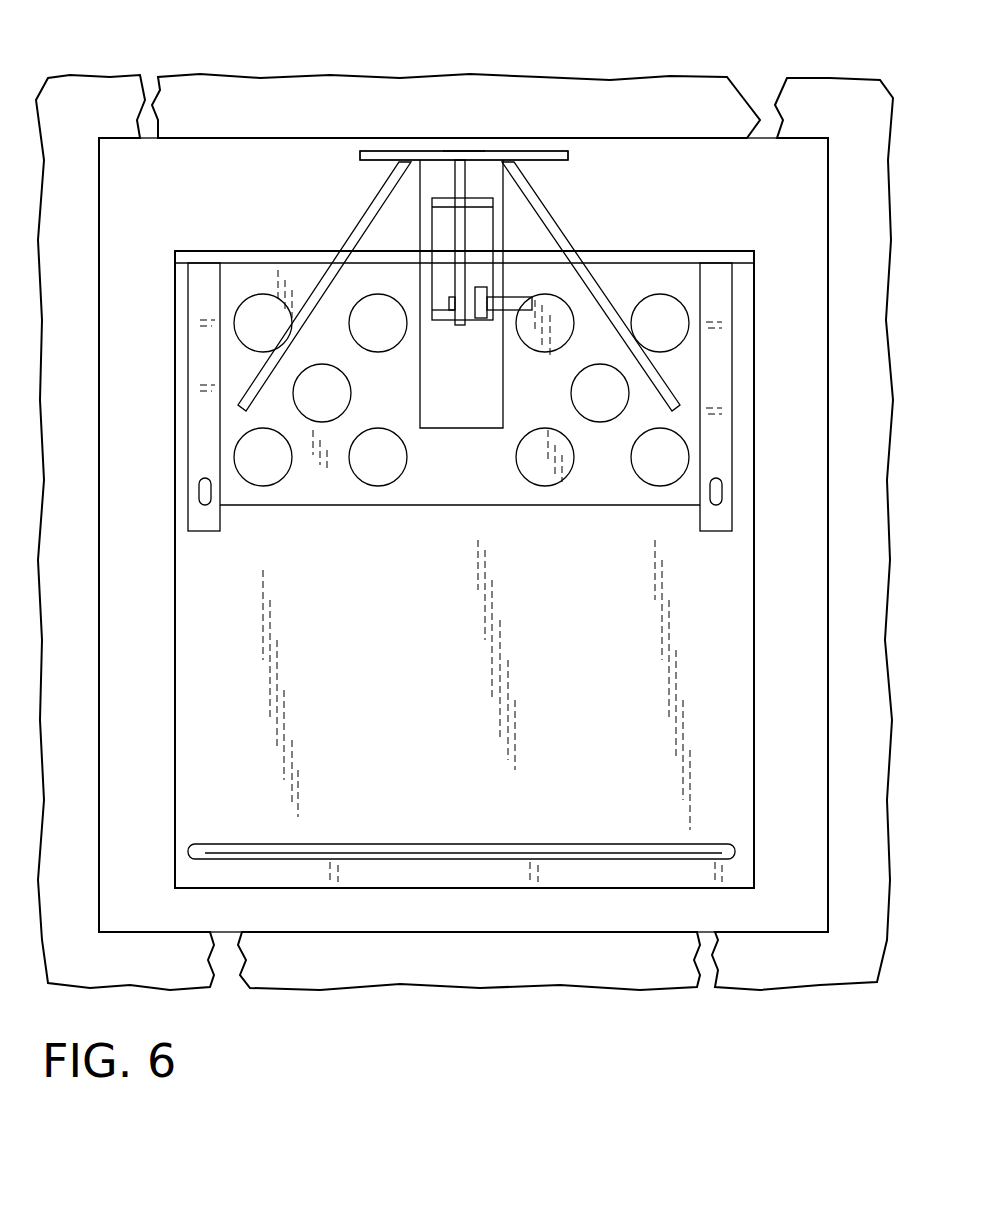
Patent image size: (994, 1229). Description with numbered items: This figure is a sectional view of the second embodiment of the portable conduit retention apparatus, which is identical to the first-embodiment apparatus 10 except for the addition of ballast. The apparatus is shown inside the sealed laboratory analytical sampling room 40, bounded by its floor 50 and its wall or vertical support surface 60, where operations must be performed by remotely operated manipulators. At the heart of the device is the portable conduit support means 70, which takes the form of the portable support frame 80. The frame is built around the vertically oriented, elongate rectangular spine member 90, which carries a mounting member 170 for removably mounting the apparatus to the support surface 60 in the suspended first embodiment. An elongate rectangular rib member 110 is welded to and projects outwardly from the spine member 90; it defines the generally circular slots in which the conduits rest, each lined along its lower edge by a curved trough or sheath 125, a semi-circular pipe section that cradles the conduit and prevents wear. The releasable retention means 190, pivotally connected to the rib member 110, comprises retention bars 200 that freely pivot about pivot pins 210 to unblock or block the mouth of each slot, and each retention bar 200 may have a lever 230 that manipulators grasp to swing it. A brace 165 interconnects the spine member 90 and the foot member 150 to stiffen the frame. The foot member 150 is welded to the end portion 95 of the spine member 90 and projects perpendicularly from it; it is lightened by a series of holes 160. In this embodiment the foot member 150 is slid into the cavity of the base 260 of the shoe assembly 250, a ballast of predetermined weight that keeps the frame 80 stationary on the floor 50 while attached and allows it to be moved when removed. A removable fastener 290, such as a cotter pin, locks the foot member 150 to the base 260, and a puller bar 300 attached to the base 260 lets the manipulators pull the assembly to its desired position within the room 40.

The portable conduit retention apparatus 10 is at (230, 186).
The laboratory analytical sampling cell or room 40 is at (810, 90).
The floor 50 is at (287, 923).
The wall or vertical support surface 60 is at (645, 138).
The portable conduit support means 70 is at (222, 221).
The portable support frame 80 is at (329, 182).
The spine member 90 is at (443, 152).
The end portion 95 is at (433, 425).
The rib member 110 is at (455, 182).
The curved trough or sheath 125 is at (473, 222).
The foot member 150 is at (275, 493).
The holes 160 is at (357, 470).
The brace 165 is at (583, 247).
The mounting member 170 is at (567, 160).
The releasable retention means 190 is at (471, 338).
The retention bar 200 is at (487, 297).
The pivot pin 210 is at (447, 322).
The lever 230 is at (500, 310).
The shoe assembly 250 is at (769, 641).
The base 260 is at (755, 733).
The removable fastener 290 is at (722, 497).
The puller bar 300 is at (453, 842).